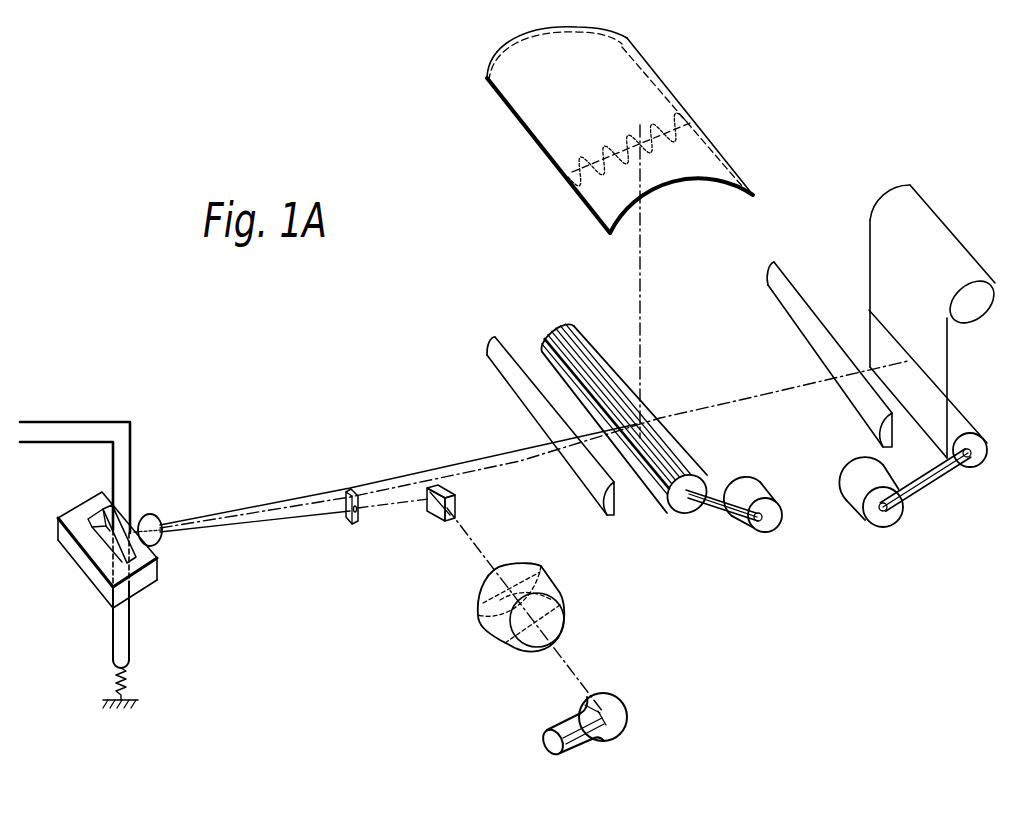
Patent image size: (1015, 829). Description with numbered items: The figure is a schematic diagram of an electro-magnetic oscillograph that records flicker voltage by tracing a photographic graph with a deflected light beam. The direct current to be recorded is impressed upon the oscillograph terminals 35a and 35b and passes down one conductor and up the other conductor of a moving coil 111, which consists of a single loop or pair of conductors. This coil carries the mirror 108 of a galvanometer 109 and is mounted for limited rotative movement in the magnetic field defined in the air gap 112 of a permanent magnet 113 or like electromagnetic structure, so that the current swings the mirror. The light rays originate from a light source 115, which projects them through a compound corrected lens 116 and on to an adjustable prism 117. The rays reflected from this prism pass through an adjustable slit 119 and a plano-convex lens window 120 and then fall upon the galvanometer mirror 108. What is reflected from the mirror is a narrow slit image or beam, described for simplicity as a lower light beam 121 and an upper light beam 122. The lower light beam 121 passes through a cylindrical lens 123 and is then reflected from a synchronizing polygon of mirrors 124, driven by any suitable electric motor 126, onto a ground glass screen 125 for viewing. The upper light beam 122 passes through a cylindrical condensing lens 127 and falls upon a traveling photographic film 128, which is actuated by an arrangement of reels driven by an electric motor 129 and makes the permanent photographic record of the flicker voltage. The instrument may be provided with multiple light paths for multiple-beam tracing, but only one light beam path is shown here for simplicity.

The oscillograph terminal 35a is at (62, 421).
The oscillograph terminal 35b is at (70, 444).
The galvanometer mirror 108 is at (123, 530).
The galvanometer 109 is at (131, 543).
The moving coil 111 is at (112, 638).
The air gap 112 is at (98, 519).
The permanent magnet 113 is at (96, 572).
The light source 115 is at (627, 717).
The compound corrected lens 116 is at (565, 612).
The adjustable prism 117 is at (438, 508).
The adjustable slit 119 is at (355, 523).
The plano-convex lens window 120 is at (153, 543).
The lower light beam 121 is at (531, 460).
The upper light beam 122 is at (470, 460).
The cylindrical lens 123 is at (601, 497).
The synchronizing polygon of mirrors 124 is at (677, 452).
The ground glass screen 125 is at (542, 125).
The electric motor 126 is at (749, 532).
The cylindrical condensing lens 127 is at (852, 387).
The traveling photographic film 128 is at (949, 360).
The electric motor 129 is at (871, 520).